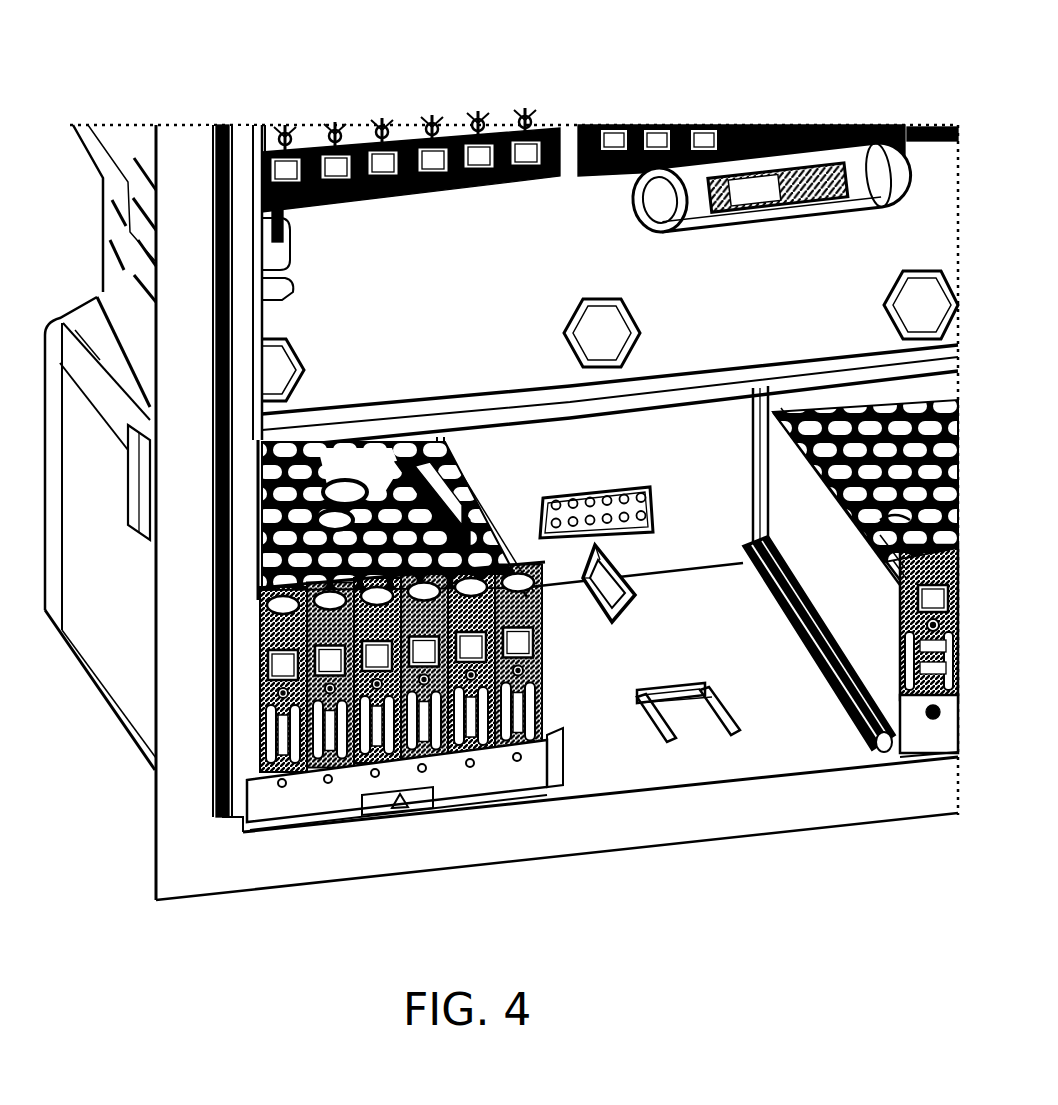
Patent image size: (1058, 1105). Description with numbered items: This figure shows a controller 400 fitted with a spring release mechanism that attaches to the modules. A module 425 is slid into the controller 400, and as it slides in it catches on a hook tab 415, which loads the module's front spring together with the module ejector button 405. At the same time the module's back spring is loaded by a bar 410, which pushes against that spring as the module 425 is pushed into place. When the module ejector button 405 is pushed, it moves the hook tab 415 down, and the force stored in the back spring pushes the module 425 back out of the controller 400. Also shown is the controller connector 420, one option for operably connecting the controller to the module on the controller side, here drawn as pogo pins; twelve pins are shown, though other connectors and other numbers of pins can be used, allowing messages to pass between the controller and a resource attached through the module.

The controller 400 is at (857, 102).
The module ejector button 405 is at (417, 800).
The bar 410 is at (620, 628).
The hook tab 415 is at (689, 722).
The controller connector 420 is at (583, 500).
The module 425 is at (364, 478).